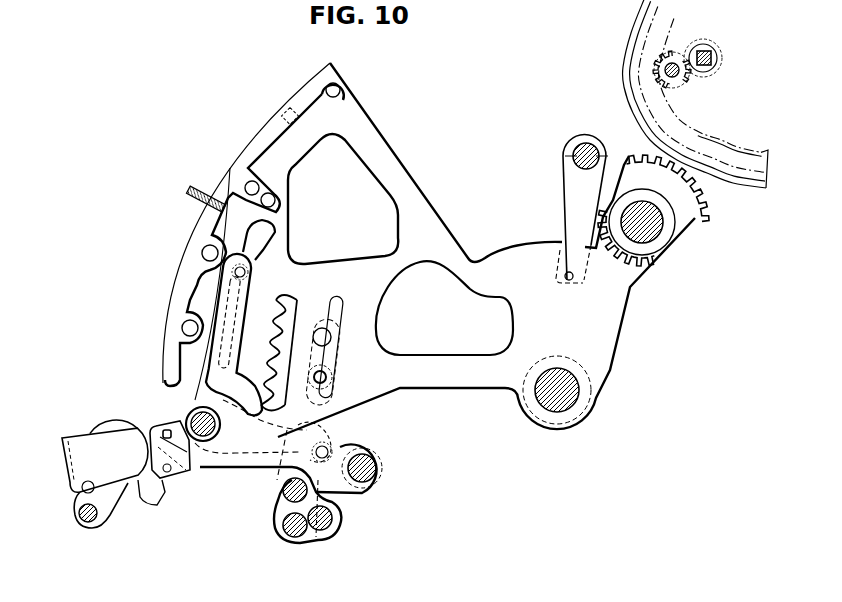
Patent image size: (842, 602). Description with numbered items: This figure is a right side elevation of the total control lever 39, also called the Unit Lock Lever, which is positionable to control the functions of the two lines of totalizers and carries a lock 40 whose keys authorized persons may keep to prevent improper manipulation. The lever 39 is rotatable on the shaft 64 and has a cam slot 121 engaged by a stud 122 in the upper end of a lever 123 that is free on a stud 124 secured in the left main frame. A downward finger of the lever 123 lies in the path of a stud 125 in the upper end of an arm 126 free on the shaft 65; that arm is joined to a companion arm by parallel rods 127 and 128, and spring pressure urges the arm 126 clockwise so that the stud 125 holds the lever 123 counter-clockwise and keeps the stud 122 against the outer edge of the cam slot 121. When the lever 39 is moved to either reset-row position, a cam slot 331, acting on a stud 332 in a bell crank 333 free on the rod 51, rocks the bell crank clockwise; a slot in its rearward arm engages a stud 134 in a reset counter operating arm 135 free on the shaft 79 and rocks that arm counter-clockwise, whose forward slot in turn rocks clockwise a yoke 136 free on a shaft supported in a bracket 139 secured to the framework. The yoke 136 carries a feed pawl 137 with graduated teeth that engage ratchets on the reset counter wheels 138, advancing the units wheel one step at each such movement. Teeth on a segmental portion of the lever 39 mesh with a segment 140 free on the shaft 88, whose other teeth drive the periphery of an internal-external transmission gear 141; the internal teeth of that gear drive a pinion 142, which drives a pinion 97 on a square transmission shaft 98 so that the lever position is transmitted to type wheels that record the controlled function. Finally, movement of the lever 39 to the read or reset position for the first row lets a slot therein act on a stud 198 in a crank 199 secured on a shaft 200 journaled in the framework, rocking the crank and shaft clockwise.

The total control lever 39 is at (183, 281).
The lock 40 is at (198, 203).
The bell crank 333 is at (215, 297).
The cam slot 331 is at (275, 232).
The stud 332 is at (248, 272).
The cam slot 121 is at (341, 298).
The stud 122 is at (331, 336).
The stud 124 is at (331, 378).
The lever 123 is at (336, 405).
The rod 51 is at (193, 418).
The stud 134 is at (343, 447).
The stud 125 is at (296, 442).
The reset counter operating arm 135 is at (245, 458).
The shaft 65 is at (282, 488).
The arm 126 is at (282, 503).
The rod 127 is at (285, 530).
The rod 128 is at (336, 520).
The shaft 79 is at (376, 467).
The reset counter wheel 138 is at (116, 421).
The bracket 139 is at (84, 450).
The yoke 136 is at (168, 487).
The feed pawl 137 is at (150, 495).
The shaft 64 is at (578, 398).
The segment 140 is at (687, 216).
The shaft 88 is at (657, 242).
The crank 199 is at (567, 186).
The shaft 200 is at (585, 143).
The stud 198 is at (570, 284).
The internal-external transmission gear 141 is at (735, 163).
The pinion 142 is at (677, 82).
The pinion 97 is at (716, 42).
The square transmission shaft 98 is at (712, 64).